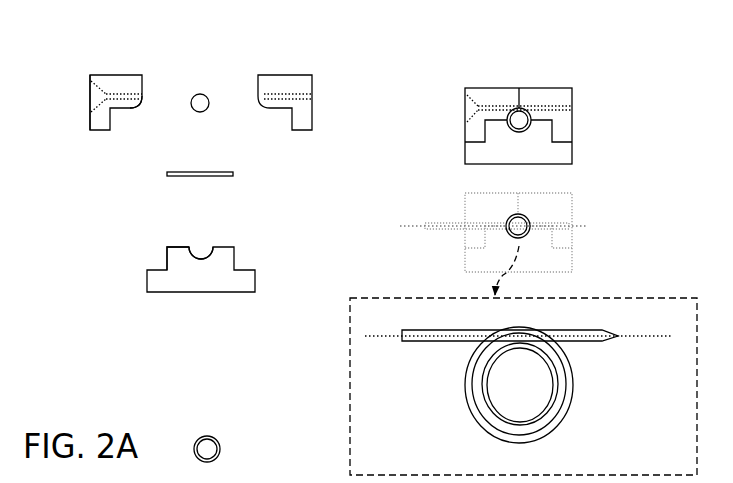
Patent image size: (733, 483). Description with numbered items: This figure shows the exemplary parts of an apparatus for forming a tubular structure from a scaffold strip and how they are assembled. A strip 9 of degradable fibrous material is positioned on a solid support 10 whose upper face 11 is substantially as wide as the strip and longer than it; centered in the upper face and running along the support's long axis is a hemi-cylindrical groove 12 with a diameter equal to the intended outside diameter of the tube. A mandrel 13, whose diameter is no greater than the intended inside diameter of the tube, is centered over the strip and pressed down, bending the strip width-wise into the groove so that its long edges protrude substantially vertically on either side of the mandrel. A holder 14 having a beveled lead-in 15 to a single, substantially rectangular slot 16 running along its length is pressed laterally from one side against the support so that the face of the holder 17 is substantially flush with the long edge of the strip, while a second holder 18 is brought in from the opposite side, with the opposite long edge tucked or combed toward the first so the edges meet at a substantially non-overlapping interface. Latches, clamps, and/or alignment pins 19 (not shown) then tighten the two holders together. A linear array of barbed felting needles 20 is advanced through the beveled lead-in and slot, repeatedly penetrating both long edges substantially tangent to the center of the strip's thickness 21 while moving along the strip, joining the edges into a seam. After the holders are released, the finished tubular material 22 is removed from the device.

The strip 9 is at (242, 178).
The solid support 10 is at (203, 301).
The upper face 11 is at (158, 248).
The hemi-cylindrical groove 12 is at (203, 246).
The mandrel 13 is at (191, 91).
The holder 14 is at (118, 73).
The beveled lead-in 15 is at (89, 97).
The rectangular slot 16 is at (137, 100).
The face of the holder 17 is at (514, 99).
The second holder 18 is at (281, 69).
The latches, clamps, and/or alignment pins 19 is at (578, 58).
The felting needles 20 is at (448, 208).
The center of the strip's thickness 21 is at (574, 339).
The tubular material 22 is at (228, 443).